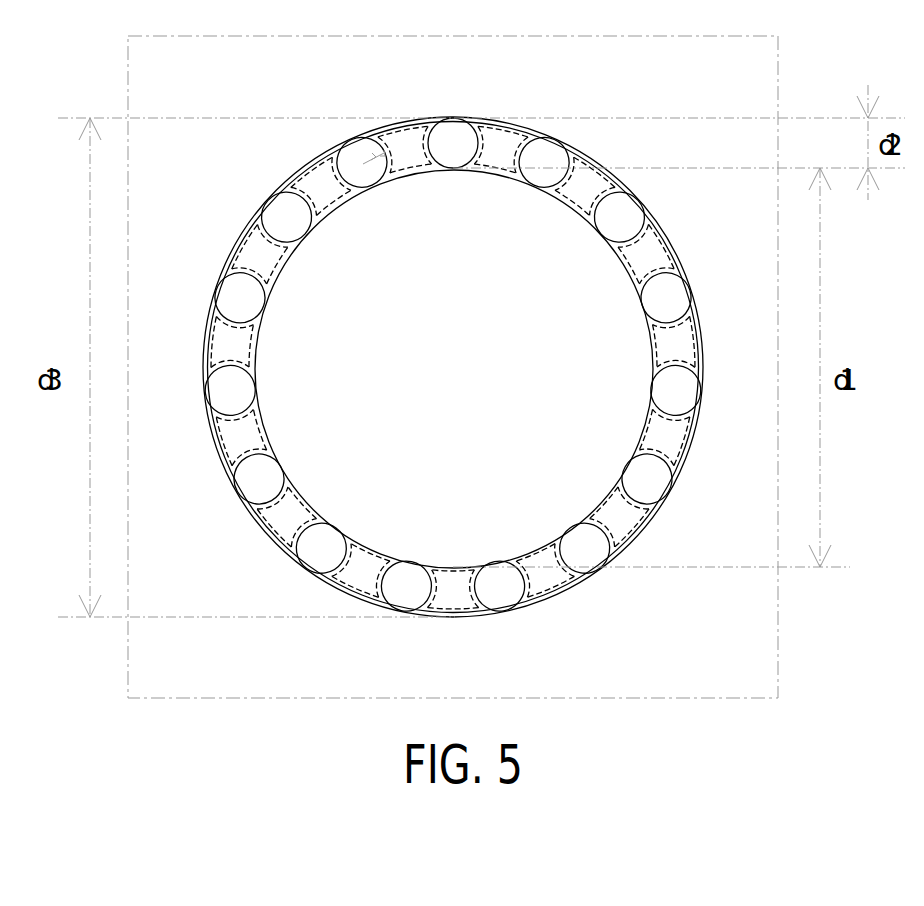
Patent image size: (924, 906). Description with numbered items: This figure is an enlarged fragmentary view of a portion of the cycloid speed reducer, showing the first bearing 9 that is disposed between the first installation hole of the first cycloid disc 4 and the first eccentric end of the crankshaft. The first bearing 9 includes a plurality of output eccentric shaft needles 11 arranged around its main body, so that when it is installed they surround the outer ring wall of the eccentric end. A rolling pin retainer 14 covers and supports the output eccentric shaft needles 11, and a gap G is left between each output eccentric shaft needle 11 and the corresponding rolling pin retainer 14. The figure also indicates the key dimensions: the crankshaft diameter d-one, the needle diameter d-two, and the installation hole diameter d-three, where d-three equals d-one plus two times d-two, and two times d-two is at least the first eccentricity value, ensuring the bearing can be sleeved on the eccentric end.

The first cycloid disc 4 is at (160, 79).
The first bearing 9 is at (509, 130).
The output eccentric shaft needles 11 is at (352, 163).
The rolling pin retainer 14 is at (391, 150).
The gap G is at (378, 150).